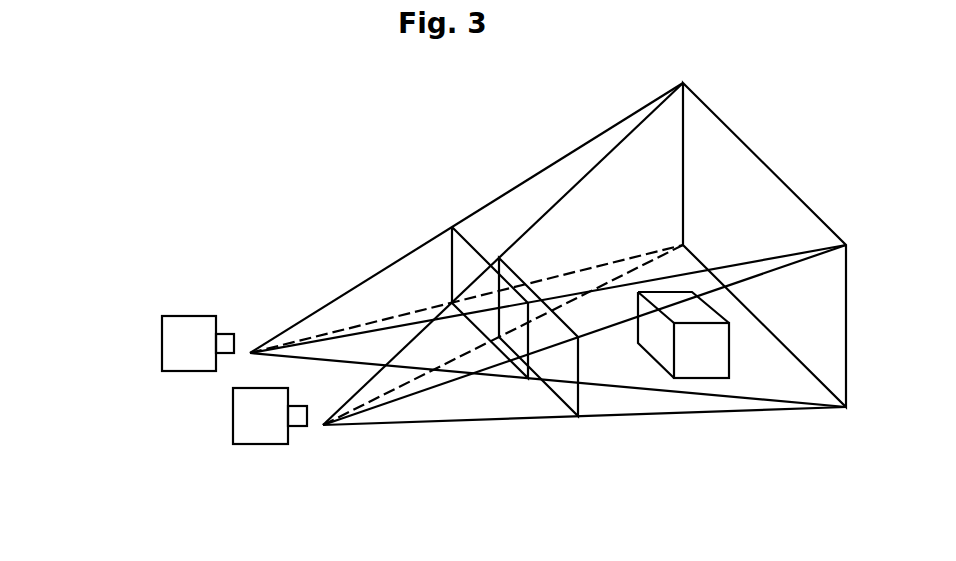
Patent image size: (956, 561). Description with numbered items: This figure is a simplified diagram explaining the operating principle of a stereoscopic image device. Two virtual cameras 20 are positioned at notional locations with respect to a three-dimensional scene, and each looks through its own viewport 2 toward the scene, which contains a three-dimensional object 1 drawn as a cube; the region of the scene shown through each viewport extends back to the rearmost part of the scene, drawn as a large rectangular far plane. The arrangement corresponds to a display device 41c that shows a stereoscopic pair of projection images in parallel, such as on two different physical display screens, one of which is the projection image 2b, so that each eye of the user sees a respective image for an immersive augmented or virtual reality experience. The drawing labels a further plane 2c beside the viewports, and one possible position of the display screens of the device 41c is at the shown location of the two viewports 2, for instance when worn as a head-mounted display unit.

The 3D object 1 is at (605, 302).
The viewport 2 is at (511, 364).
The projection image 2b is at (582, 355).
The virtual plane 2c is at (530, 336).
The virtual camera 20 is at (233, 417).
The display device 41c is at (528, 455).